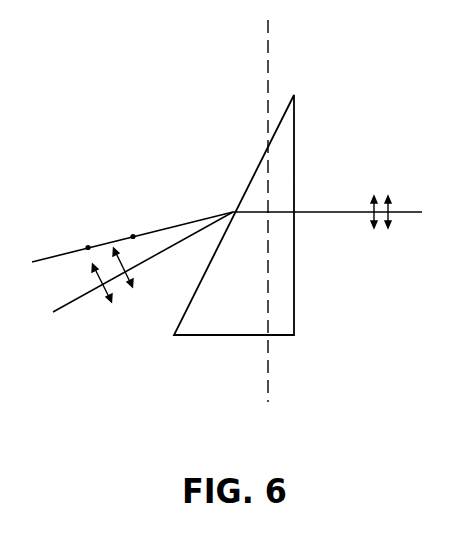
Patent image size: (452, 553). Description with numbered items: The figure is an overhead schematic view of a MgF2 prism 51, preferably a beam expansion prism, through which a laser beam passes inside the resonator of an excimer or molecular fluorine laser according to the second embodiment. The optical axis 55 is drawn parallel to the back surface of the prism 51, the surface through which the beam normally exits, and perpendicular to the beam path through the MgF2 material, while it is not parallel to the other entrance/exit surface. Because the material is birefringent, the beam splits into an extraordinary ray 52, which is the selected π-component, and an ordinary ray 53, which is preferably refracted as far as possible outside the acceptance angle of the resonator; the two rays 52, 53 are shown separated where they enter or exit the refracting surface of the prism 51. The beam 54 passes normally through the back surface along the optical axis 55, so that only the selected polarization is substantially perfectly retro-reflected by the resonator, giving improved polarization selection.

The prism 51 is at (244, 191).
The extraordinary ray 52 is at (73, 300).
The ordinary ray 53 is at (60, 255).
The output light ray along optical axis 54 is at (340, 210).
The optical axis 55 is at (268, 77).